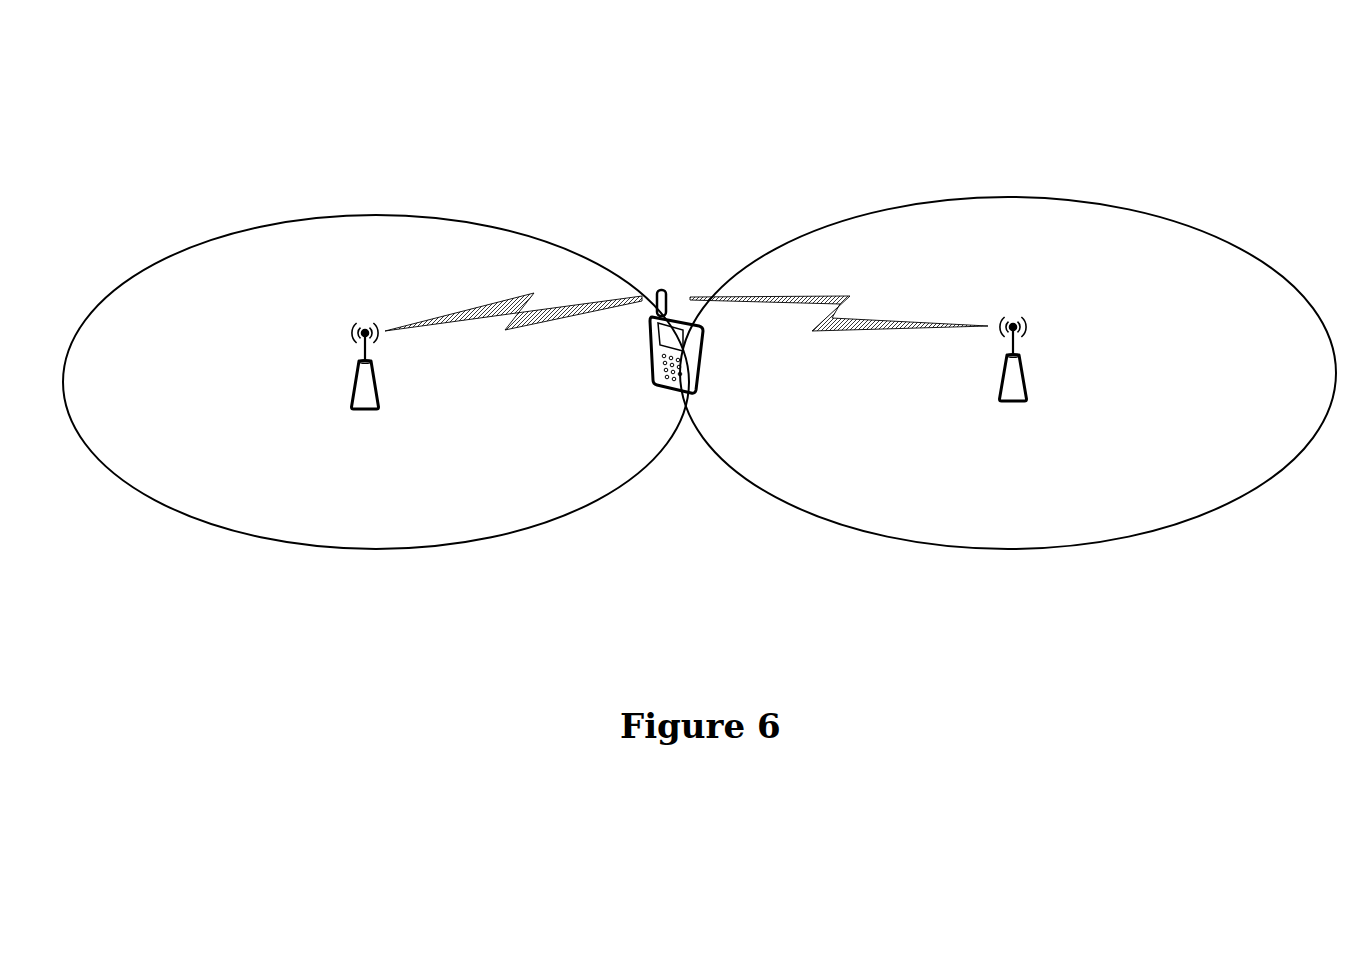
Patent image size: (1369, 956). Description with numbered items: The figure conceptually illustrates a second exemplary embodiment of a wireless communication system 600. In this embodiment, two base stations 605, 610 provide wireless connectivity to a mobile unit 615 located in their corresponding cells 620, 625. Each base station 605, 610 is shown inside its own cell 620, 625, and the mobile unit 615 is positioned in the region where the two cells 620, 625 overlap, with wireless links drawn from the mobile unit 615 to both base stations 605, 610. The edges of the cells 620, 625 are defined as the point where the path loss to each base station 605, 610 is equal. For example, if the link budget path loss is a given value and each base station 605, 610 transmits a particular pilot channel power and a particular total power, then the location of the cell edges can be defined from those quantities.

The wireless communication system 600 is at (1122, 71).
The base station 605 is at (365, 410).
The base station 610 is at (1013, 402).
The mobile unit 615 is at (690, 393).
The cell 620 is at (375, 551).
The cell 625 is at (1040, 551).